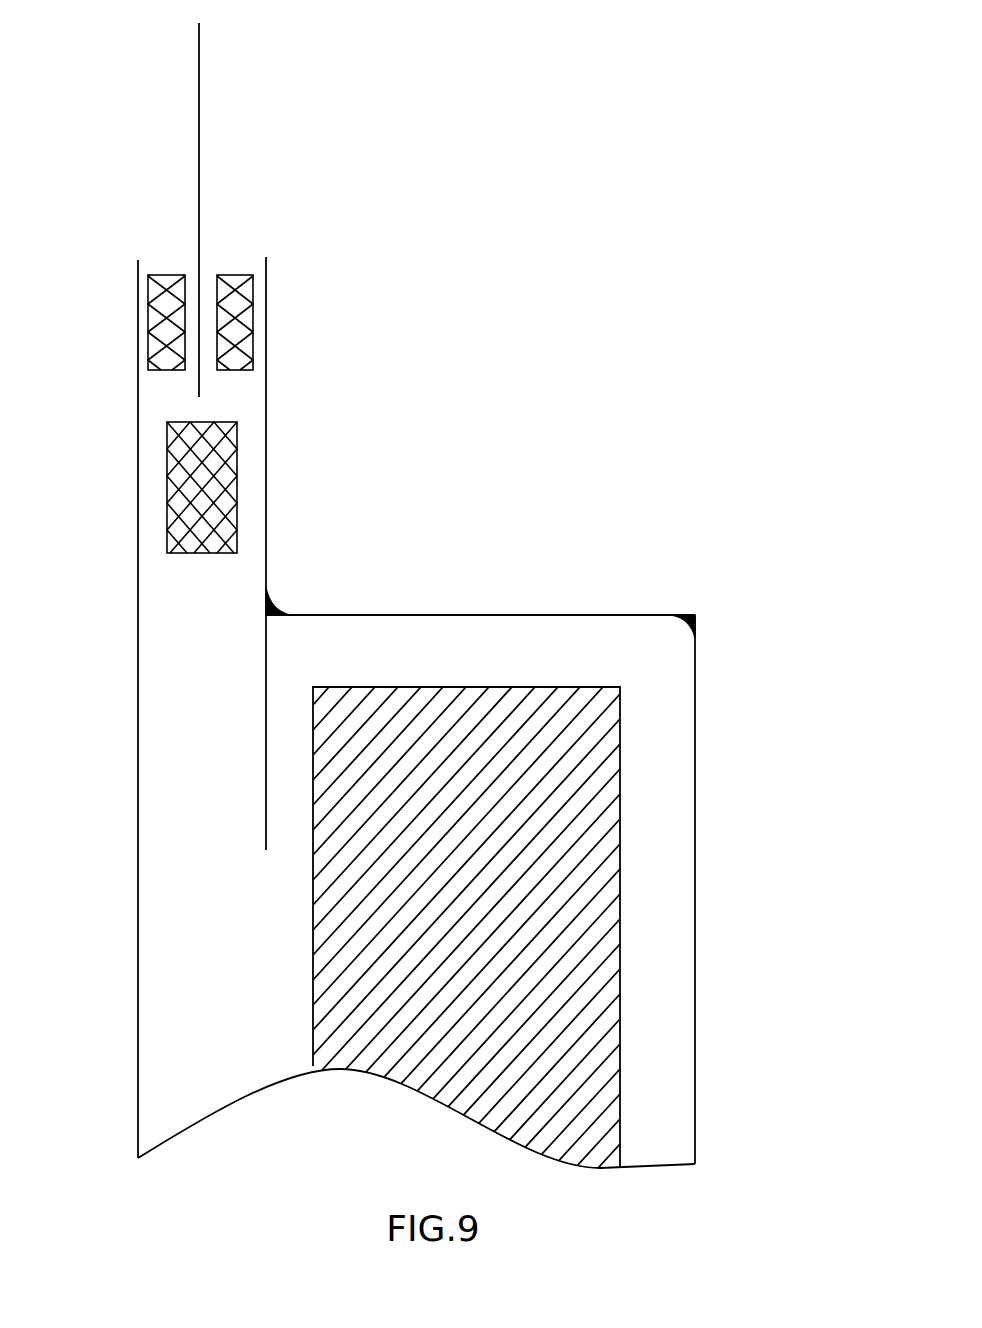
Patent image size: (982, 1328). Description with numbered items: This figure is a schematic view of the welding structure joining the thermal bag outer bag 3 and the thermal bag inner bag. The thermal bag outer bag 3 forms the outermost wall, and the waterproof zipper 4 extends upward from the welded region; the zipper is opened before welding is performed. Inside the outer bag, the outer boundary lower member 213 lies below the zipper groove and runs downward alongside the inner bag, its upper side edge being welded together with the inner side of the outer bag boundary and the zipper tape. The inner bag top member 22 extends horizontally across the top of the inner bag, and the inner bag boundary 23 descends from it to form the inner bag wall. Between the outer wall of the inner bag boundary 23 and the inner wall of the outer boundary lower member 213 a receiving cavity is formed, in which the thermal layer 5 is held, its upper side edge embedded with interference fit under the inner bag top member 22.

The thermal bag outer bag 3 is at (138, 530).
The waterproof zipper 4 is at (199, 115).
The thermal layer 5 is at (602, 780).
The inner bag top member 22 is at (466, 615).
The inner bag boundary 23 is at (695, 932).
The outer boundary lower member 213 is at (266, 403).